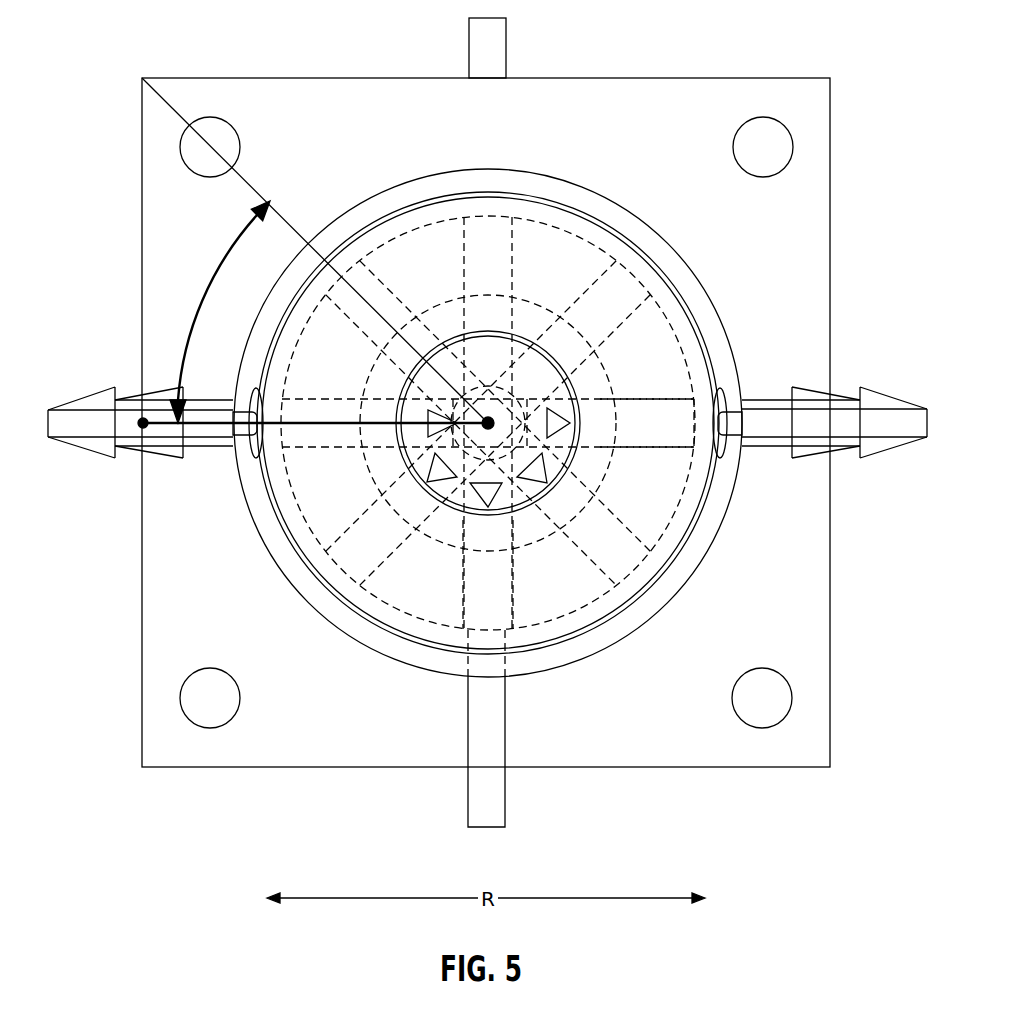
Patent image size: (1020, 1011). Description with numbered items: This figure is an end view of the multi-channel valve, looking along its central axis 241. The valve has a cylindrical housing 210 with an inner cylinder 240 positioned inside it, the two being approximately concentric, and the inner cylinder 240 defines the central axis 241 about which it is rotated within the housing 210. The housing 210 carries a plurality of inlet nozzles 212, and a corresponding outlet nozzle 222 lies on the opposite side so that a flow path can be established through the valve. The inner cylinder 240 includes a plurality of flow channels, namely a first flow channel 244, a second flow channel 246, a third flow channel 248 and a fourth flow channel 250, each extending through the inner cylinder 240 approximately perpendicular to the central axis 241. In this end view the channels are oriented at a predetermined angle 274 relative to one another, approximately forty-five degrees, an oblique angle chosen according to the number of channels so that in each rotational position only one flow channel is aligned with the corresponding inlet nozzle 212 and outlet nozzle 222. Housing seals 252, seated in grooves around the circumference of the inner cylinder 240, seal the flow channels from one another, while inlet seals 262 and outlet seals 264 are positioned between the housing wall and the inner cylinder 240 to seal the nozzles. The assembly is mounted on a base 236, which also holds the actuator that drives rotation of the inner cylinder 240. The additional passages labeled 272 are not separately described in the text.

The cylindrical housing 210 is at (253, 477).
The inlet nozzles 212 is at (880, 405).
The inlet fitting 222 is at (100, 405).
The base 236 is at (690, 110).
The inner cylinder 240 is at (580, 265).
The central axis 241 is at (488, 423).
The first flow channel 244 is at (347, 538).
The second flow channel 246 is at (505, 540).
The third flow channel 248 is at (615, 523).
The fourth flow channel 250 is at (712, 400).
The housing seals 252 is at (383, 230).
The inlet seals 262 is at (663, 410).
The outlet seals 264 is at (250, 405).
The flow channels 272 is at (383, 318).
The predetermined angle 274 is at (227, 250).